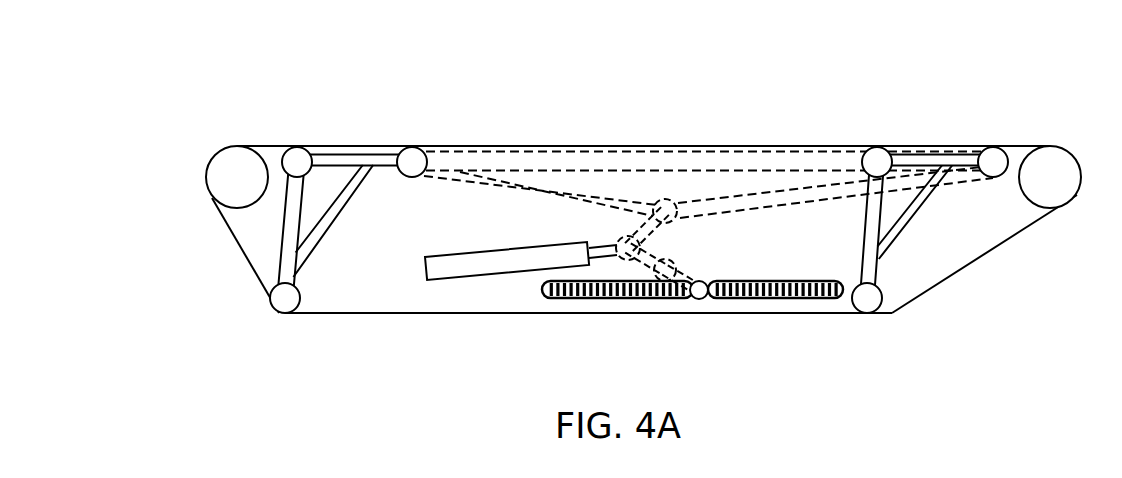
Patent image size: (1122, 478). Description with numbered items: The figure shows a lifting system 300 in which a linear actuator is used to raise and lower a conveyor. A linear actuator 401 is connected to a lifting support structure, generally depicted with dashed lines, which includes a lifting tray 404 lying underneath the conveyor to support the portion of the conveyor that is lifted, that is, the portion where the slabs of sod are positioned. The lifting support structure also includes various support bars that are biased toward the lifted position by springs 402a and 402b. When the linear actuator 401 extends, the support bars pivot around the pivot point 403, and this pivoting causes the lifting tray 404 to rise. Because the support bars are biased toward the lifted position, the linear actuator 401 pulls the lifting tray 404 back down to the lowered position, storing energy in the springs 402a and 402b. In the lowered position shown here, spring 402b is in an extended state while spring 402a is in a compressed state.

The lifting system 300 is at (281, 110).
The linear actuator 401 is at (467, 250).
The spring 402a is at (777, 288).
The spring 402b is at (580, 297).
The pivot point 403 is at (665, 268).
The lifting tray 404 is at (627, 165).